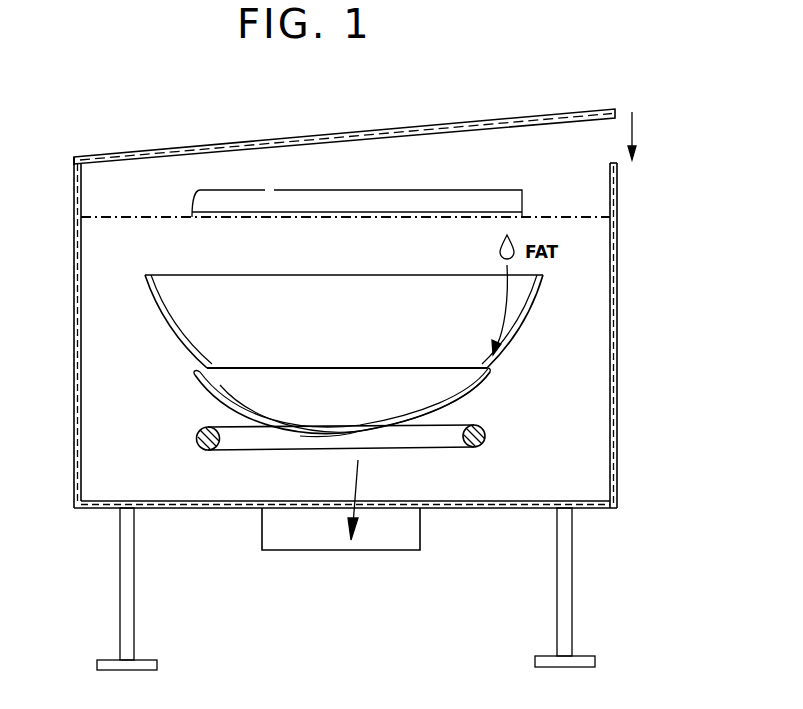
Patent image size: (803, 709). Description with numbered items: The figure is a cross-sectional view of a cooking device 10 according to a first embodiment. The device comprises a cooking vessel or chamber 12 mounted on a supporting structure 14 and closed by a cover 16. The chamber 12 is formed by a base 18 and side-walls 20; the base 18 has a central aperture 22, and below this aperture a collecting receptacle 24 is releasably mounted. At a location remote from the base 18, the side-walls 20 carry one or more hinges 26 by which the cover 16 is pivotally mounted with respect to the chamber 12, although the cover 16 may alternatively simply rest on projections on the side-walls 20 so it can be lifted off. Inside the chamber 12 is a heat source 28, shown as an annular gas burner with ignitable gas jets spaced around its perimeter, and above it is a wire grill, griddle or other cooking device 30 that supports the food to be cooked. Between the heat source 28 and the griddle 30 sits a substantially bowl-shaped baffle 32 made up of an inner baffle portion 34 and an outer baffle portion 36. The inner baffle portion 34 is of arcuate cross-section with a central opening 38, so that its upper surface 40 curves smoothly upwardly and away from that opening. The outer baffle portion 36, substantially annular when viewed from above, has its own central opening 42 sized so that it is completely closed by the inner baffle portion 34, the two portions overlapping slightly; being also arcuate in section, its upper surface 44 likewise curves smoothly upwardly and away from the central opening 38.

The cooking device 10 is at (648, 300).
The cooking vessel or chamber 12 is at (344, 363).
The supporting structure 14 is at (573, 562).
The cover 16 is at (280, 138).
The base 18 is at (525, 509).
The side-walls 20 is at (618, 222).
The central aperture 22 is at (293, 501).
The collecting receptacle 24 is at (311, 552).
The hinges 26 is at (76, 160).
The heat source 28 is at (486, 437).
The griddle 30 is at (582, 215).
The baffle 32 is at (350, 356).
The inner baffle portion 34 is at (480, 387).
The outer baffle portion 36 is at (522, 340).
The central opening 38 is at (310, 427).
The upper surface 40 is at (287, 423).
The central opening 42 is at (210, 368).
The upper surface 44 is at (166, 312).